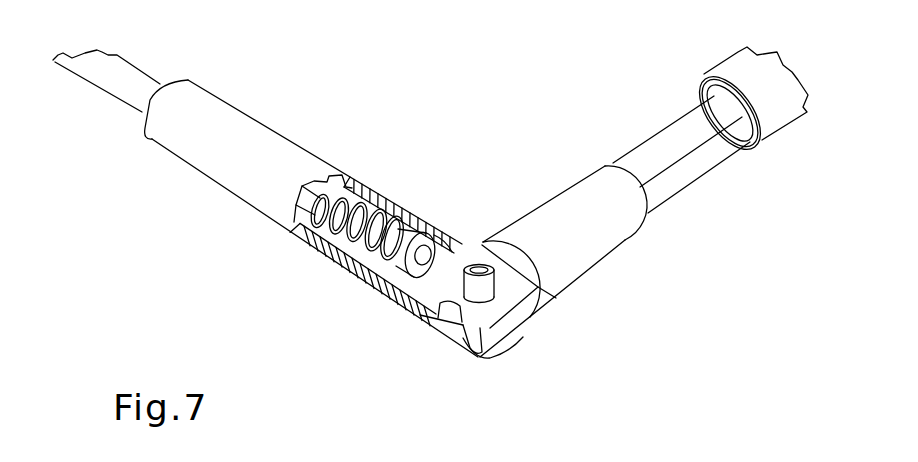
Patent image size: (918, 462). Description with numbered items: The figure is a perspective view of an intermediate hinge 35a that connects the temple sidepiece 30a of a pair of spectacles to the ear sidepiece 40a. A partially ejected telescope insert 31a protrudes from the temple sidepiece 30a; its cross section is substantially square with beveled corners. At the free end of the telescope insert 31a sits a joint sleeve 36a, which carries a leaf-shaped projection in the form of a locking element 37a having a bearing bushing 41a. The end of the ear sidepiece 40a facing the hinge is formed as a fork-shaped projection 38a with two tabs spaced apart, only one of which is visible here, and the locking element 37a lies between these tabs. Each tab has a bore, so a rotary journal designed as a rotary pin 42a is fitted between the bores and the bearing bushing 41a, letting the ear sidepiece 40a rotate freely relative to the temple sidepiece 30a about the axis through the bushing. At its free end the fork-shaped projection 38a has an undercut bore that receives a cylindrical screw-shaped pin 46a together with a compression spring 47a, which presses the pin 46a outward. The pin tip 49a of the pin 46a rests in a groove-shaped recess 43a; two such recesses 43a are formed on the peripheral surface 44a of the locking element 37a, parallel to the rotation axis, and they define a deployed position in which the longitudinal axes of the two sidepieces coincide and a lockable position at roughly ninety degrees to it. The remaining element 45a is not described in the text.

The temple sidepiece 30a is at (752, 65).
The telescope insert 31a is at (688, 168).
The intermediate hinge 35a is at (522, 190).
The joint sleeve 36a is at (573, 248).
The locking element 37a is at (491, 317).
The fork-shaped projection 38a is at (428, 313).
The ear sidepiece 40a is at (122, 81).
The bearing bushing 41a is at (488, 313).
The rotary pin 42a is at (478, 266).
The groove-shaped recess 43a is at (487, 343).
The peripheral surface 44a is at (420, 300).
The piston rod 45a is at (405, 281).
The cylindrical pin 46a is at (397, 257).
The compression spring 47a is at (312, 214).
The pin tip 49a is at (446, 259).